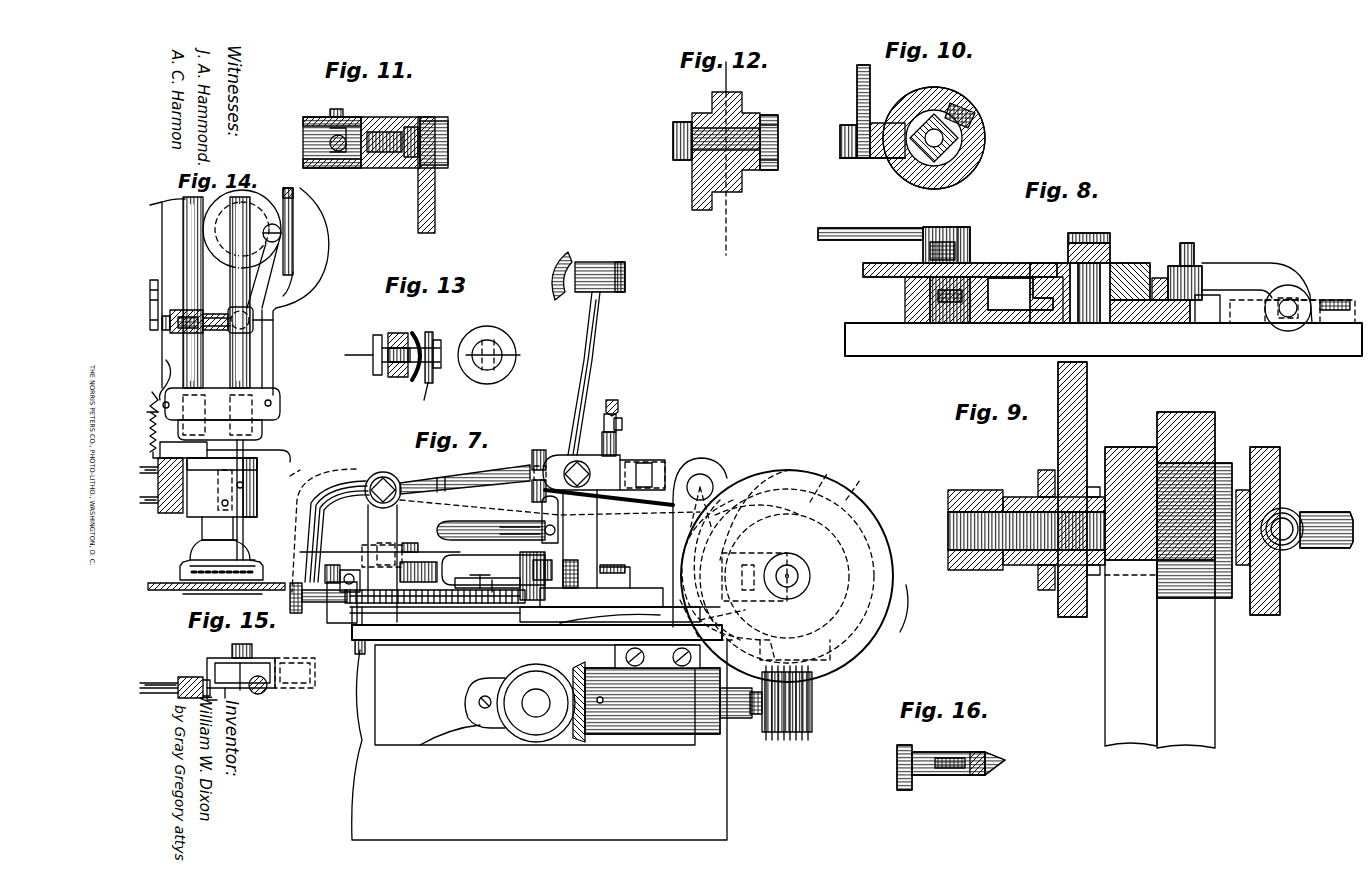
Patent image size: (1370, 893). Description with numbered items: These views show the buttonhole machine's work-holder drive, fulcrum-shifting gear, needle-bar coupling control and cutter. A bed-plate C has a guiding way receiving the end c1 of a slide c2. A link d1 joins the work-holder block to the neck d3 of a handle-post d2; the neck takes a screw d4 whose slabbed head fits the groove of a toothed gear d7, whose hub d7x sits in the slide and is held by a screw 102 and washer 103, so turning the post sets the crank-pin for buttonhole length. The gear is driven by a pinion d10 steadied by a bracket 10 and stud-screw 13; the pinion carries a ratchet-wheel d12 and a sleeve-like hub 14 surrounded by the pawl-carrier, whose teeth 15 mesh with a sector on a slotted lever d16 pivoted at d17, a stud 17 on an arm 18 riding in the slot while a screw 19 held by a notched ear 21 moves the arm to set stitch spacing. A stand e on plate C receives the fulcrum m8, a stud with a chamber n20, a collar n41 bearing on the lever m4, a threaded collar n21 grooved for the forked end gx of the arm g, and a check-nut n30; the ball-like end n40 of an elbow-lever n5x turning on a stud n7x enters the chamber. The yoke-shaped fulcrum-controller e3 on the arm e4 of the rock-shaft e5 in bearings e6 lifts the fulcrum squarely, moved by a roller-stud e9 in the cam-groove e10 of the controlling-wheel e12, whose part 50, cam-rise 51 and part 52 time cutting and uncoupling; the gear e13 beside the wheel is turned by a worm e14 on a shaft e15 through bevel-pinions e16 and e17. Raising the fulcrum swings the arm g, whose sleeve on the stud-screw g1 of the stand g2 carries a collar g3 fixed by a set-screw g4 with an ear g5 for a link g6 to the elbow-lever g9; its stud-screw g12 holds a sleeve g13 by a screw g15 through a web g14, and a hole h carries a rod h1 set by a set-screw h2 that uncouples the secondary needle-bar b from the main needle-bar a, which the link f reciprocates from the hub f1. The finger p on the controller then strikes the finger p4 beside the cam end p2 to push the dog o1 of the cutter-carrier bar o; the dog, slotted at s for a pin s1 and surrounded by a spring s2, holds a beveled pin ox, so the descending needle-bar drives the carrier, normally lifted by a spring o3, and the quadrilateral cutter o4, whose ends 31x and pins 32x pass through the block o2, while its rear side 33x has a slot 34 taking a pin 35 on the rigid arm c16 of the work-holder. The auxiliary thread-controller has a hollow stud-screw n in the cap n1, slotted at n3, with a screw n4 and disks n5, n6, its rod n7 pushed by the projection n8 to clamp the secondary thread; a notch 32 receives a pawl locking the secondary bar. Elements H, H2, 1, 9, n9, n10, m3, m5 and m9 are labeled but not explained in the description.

In FIG. 11, the hole h is at (341, 168).
In FIG. 11, the rod h1 is at (344, 128).
In FIG. 11, the set-screw h2 is at (335, 114).
In FIG. 11, the sleeve g13 is at (398, 118).
In FIG. 11, the stud-screw g12 is at (448, 142).
In FIG. 11, the screw g15 is at (388, 152).
In FIG. 11, the web g14 is at (408, 156).
In FIG. 11, the elbow-lever g9 is at (435, 192).
In FIG. 14, the link f is at (310, 302).
In FIG. 14, the take-up-cam-operating hub f1 is at (283, 196).
In FIG. 14, the frame bracket H2 is at (322, 258).
In FIG. 7, the frame bracket H2 is at (632, 612).
In FIG. 14, the cutter-carrier bar o is at (190, 238).
In FIG. 14, the slot n3 is at (152, 281).
In FIG. 13, the slot n3 is at (420, 336).
In FIG. 14, the dog o1 is at (178, 312).
In FIG. 16, the dog o1 is at (897, 758).
In FIG. 14, the knurled nut 1 is at (215, 314).
In FIG. 14, the pin ox is at (224, 330).
In FIG. 16, the pin ox is at (995, 756).
In FIG. 14, the removable cap n1 is at (279, 319).
In FIG. 13, the removable cap n1 is at (392, 377).
In FIG. 14, the spring s2 is at (178, 334).
In FIG. 14, the spring o3 is at (160, 370).
In FIG. 14, the screw n4 is at (150, 440).
In FIG. 13, the screw n4 is at (440, 344).
In FIG. 14, the arm g is at (226, 456).
In FIG. 12, the arm g is at (768, 118).
In FIG. 10, the arm g is at (862, 162).
In FIG. 14, the rear side of cutter 33x is at (212, 462).
In FIG. 15, the rear side of cutter 33x is at (264, 658).
In FIG. 14, the slot 34 is at (218, 485).
In FIG. 14, the cutter ends 31x is at (187, 492).
In FIG. 15, the cutter ends 31x is at (208, 678).
In FIG. 7, the cutter ends 31x is at (345, 660).
In FIG. 14, the pins 32x is at (158, 513).
In FIG. 14, the block o2 is at (158, 484).
In FIG. 15, the block o2 is at (186, 677).
In FIG. 14, the cutter o4 is at (196, 548).
In FIG. 15, the cutter o4 is at (240, 694).
In FIG. 15, the notch 32 is at (160, 680).
In FIG. 15, the rigid arm c16 is at (240, 646).
In FIG. 15, the pin 35 is at (229, 676).
In FIG. 15, the main needle-bar a is at (257, 672).
In FIG. 15, the secondary needle-bar b is at (265, 692).
In FIG. 13, the shaft n9 is at (356, 345).
In FIG. 13, the rod n7 is at (378, 338).
In FIG. 13, the hollow stud-screw n is at (410, 365).
In FIG. 7, the hollow stud-screw n is at (598, 509).
In FIG. 13, the disk n5 is at (426, 399).
In FIG. 13, the disk n6 is at (505, 342).
In FIG. 7, the hand lever m3 is at (570, 258).
In FIG. 7, the lever m4 is at (592, 352).
In FIG. 9, the lever m4 is at (1210, 422).
In FIG. 7, the cam-shaped depending end p2 is at (613, 400).
In FIG. 7, the finger p4 is at (620, 420).
In FIG. 7, the finger p is at (616, 440).
In FIG. 8, the finger p is at (1088, 372).
In FIG. 9, the finger p is at (1088, 378).
In FIG. 7, the stud n7x is at (378, 472).
In FIG. 7, the projection n8 is at (368, 563).
In FIG. 7, the screw block n10 is at (335, 562).
In FIG. 7, the pinion d10 is at (343, 556).
In FIG. 8, the pinion d10 is at (1040, 263).
In FIG. 7, the elbow-lever n5x is at (490, 472).
In FIG. 9, the elbow-lever n5x is at (1330, 552).
In FIG. 7, the screw m9 is at (552, 560).
In FIG. 7, the fork or fulcrum-controller e3 is at (541, 450).
In FIG. 9, the fork or fulcrum-controller e3 is at (1090, 447).
In FIG. 7, the arm e4 is at (668, 468).
In FIG. 7, the rock-shaft e5 is at (702, 474).
In FIG. 7, the bearings e6 is at (720, 484).
In FIG. 7, the cam-rise 51 is at (757, 500).
In FIG. 7, the groove part 50 is at (826, 512).
In FIG. 7, the cam-groove e10 is at (829, 478).
In FIG. 7, the gear e13 is at (505, 665).
In FIG. 7, the controlling or cam wheel e12 is at (870, 510).
In FIG. 7, the fulcrum m8 is at (893, 537).
In FIG. 9, the fulcrum m8 is at (950, 525).
In FIG. 7, the handle-post d2 is at (412, 543).
In FIG. 8, the handle-post d2 is at (962, 227).
In FIG. 7, the link d1 is at (432, 538).
In FIG. 7, the bracket 10 is at (450, 558).
In FIG. 8, the bracket 10 is at (1125, 263).
In FIG. 7, the block m5 is at (538, 600).
In FIG. 7, the slide end c1 is at (598, 575).
In FIG. 7, the slide c2 is at (620, 585).
In FIG. 8, the slide c2 is at (905, 300).
In FIG. 9, the slide c2 is at (1142, 360).
In FIG. 7, the roller or stud e9 is at (690, 530).
In FIG. 7, the cam part 52 is at (695, 545).
In FIG. 7, the screw 19 is at (300, 610).
In FIG. 8, the screw 19 is at (1300, 300).
In FIG. 7, the notched ear 21 is at (329, 603).
In FIG. 7, the slotted lever d16 is at (460, 603).
In FIG. 8, the slotted lever d16 is at (1212, 300).
In FIG. 7, the pivot d17 is at (478, 590).
In FIG. 8, the pivot d17 is at (1162, 280).
In FIG. 7, the frame H is at (412, 640).
In FIG. 7, the bevel-pinion e17 is at (548, 742).
In FIG. 7, the beveled pinion e16 is at (585, 738).
In FIG. 7, the shaft e15 is at (740, 718).
In FIG. 7, the worm e14 is at (805, 730).
In FIG. 12, the collar g3 is at (712, 104).
In FIG. 10, the collar g3 is at (950, 100).
In FIG. 12, the stand g2 is at (690, 162).
In FIG. 10, the set-screw g4 is at (978, 112).
In FIG. 10, the link g6 is at (858, 80).
In FIG. 10, the stud-screw g1 is at (843, 125).
In FIG. 10, the ear g5 is at (842, 160).
In FIG. 8, the bed-plate C is at (1103, 339).
In FIG. 8, the ratchet-wheel d12 is at (1020, 294).
In FIG. 8, the toothed gear d7 is at (990, 263).
In FIG. 8, the neck d3 is at (922, 240).
In FIG. 8, the screw d4 is at (970, 245).
In FIG. 8, the hub d7x is at (938, 300).
In FIG. 8, the washer 103 is at (945, 323).
In FIG. 8, the screw 102 is at (965, 320).
In FIG. 8, the stud-screw 13 is at (1095, 240).
In FIG. 8, the teeth 15 is at (1040, 320).
In FIG. 8, the sleeve-like hub 14 is at (1090, 323).
In FIG. 8, the block 9 is at (1135, 278).
In FIG. 8, the stud 17 is at (1192, 250).
In FIG. 8, the arm 18 is at (1218, 268).
In FIG. 9, the set-nut n30 is at (970, 490).
In FIG. 9, the collar n21 is at (1020, 565).
In FIG. 9, the forked end gx is at (1040, 480).
In FIG. 9, the stand e is at (1128, 447).
In FIG. 9, the collar n41 is at (1212, 598).
In FIG. 9, the chamber n20 is at (1283, 505).
In FIG. 9, the ball-like end n40 is at (1290, 520).
In FIG. 16, the slot s is at (968, 758).
In FIG. 16, the pin s1 is at (980, 752).